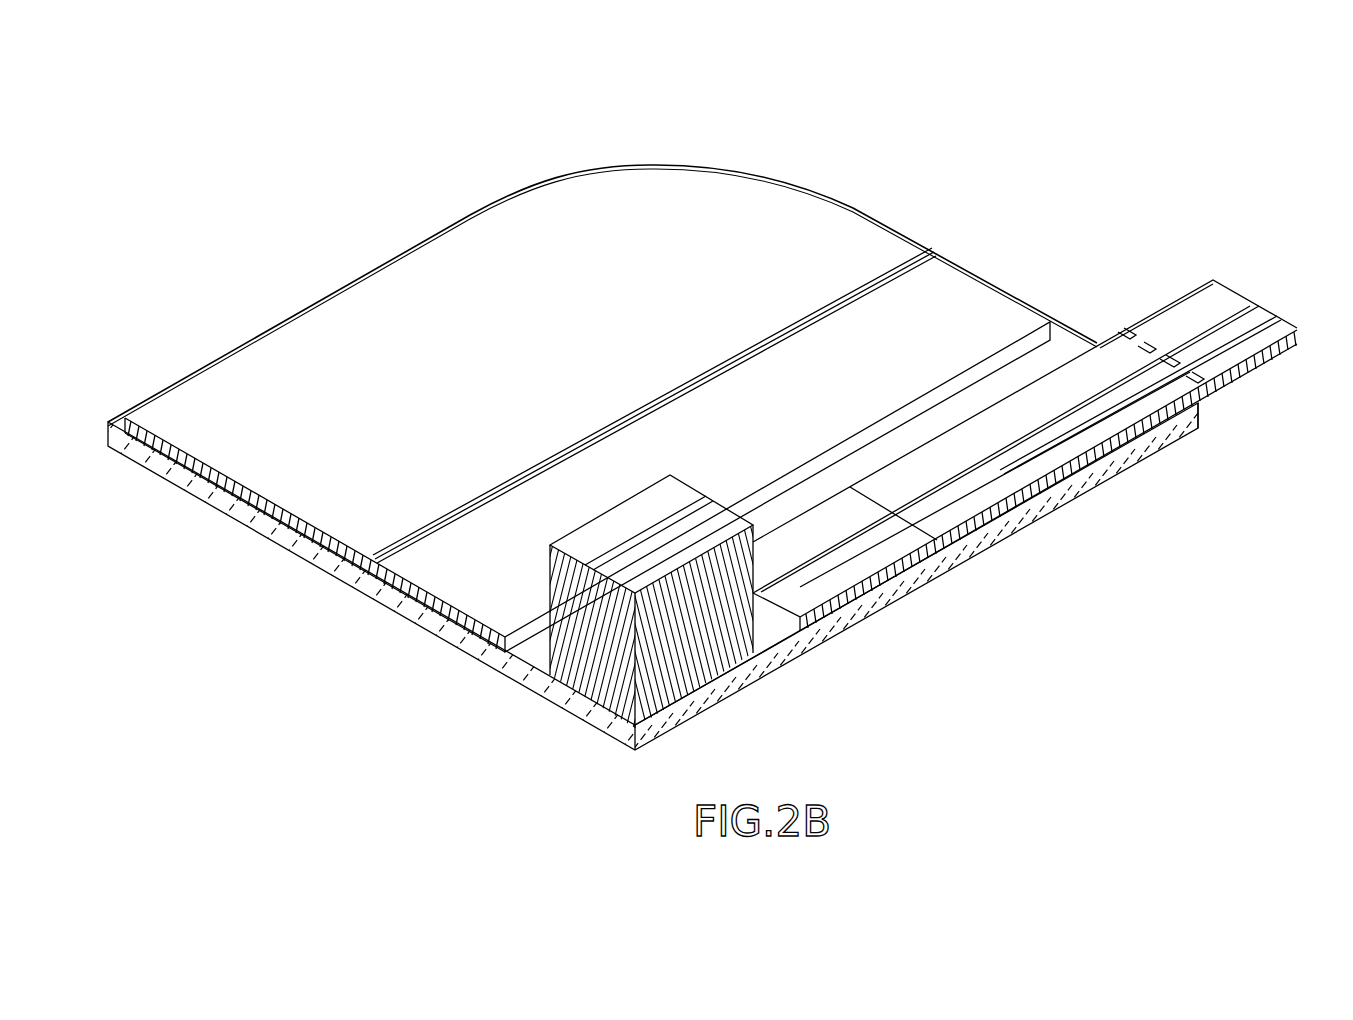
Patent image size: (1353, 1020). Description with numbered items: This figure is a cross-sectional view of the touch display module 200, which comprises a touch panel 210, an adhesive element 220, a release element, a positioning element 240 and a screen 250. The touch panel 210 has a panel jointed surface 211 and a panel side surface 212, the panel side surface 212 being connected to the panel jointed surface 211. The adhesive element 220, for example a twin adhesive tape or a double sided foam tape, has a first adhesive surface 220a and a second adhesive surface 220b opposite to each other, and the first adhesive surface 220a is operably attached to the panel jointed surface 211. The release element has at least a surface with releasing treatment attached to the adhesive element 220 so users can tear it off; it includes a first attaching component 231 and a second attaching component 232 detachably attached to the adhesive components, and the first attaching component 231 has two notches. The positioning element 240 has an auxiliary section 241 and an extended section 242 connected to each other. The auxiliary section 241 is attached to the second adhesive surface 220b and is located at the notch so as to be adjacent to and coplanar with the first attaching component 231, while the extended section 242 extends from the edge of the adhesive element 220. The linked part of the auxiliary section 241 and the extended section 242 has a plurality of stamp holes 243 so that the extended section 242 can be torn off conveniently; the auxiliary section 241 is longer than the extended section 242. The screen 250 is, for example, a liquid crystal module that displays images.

The touch display module 200 is at (126, 66).
The touch panel 210 is at (818, 630).
The panel jointed surface 211 is at (1157, 414).
The panel side surface 212 is at (1200, 417).
The adhesive element 220 is at (1003, 518).
The first adhesive surface 220a is at (983, 537).
The second adhesive surface 220b is at (1012, 484).
The first attaching component 231 is at (850, 560).
The second attaching component 232 is at (177, 407).
The positioning element 240 is at (1232, 214).
The auxiliary section 241 is at (1089, 365).
The extended section 242 is at (1170, 320).
The stamp holes 243 is at (1182, 358).
The screen 250 is at (703, 652).